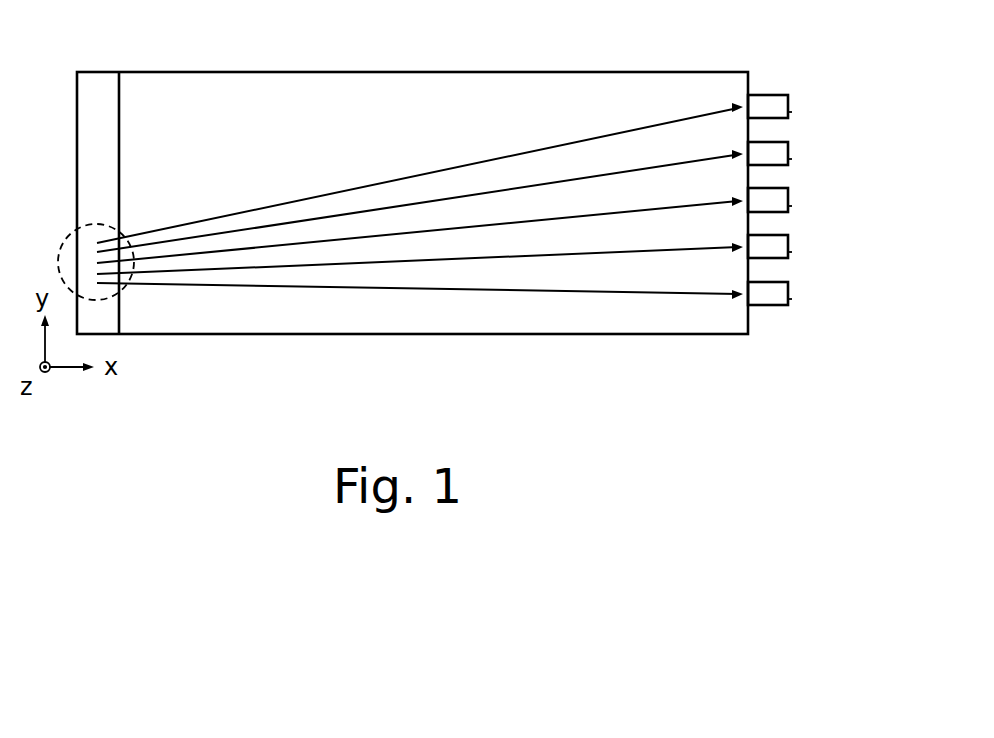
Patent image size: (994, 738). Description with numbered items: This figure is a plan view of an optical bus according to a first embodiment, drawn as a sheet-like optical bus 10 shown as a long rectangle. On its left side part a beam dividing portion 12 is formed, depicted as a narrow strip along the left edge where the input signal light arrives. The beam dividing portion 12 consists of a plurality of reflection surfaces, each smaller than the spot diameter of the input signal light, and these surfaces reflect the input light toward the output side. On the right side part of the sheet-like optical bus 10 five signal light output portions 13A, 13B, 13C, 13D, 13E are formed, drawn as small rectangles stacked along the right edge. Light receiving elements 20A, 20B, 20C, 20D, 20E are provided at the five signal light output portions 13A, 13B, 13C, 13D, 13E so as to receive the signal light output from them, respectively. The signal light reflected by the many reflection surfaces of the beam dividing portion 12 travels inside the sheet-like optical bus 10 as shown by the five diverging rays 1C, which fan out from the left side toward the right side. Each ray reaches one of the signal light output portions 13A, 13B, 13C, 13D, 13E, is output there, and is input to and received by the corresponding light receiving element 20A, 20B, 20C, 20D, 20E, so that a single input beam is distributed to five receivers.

The sheet-like optical bus 10 is at (538, 72).
The beam dividing portion 12 is at (97, 86).
The rays 1C is at (558, 291).
The signal light output portion 13A is at (752, 108).
The signal light output portion 13B is at (752, 155).
The signal light output portion 13C is at (752, 201).
The signal light output portion 13D is at (752, 247).
The signal light output portion 13E is at (752, 294).
The light receiving element 20A is at (790, 112).
The light receiving element 20B is at (790, 159).
The light receiving element 20C is at (790, 206).
The light receiving element 20D is at (790, 252).
The light receiving element 20E is at (790, 299).